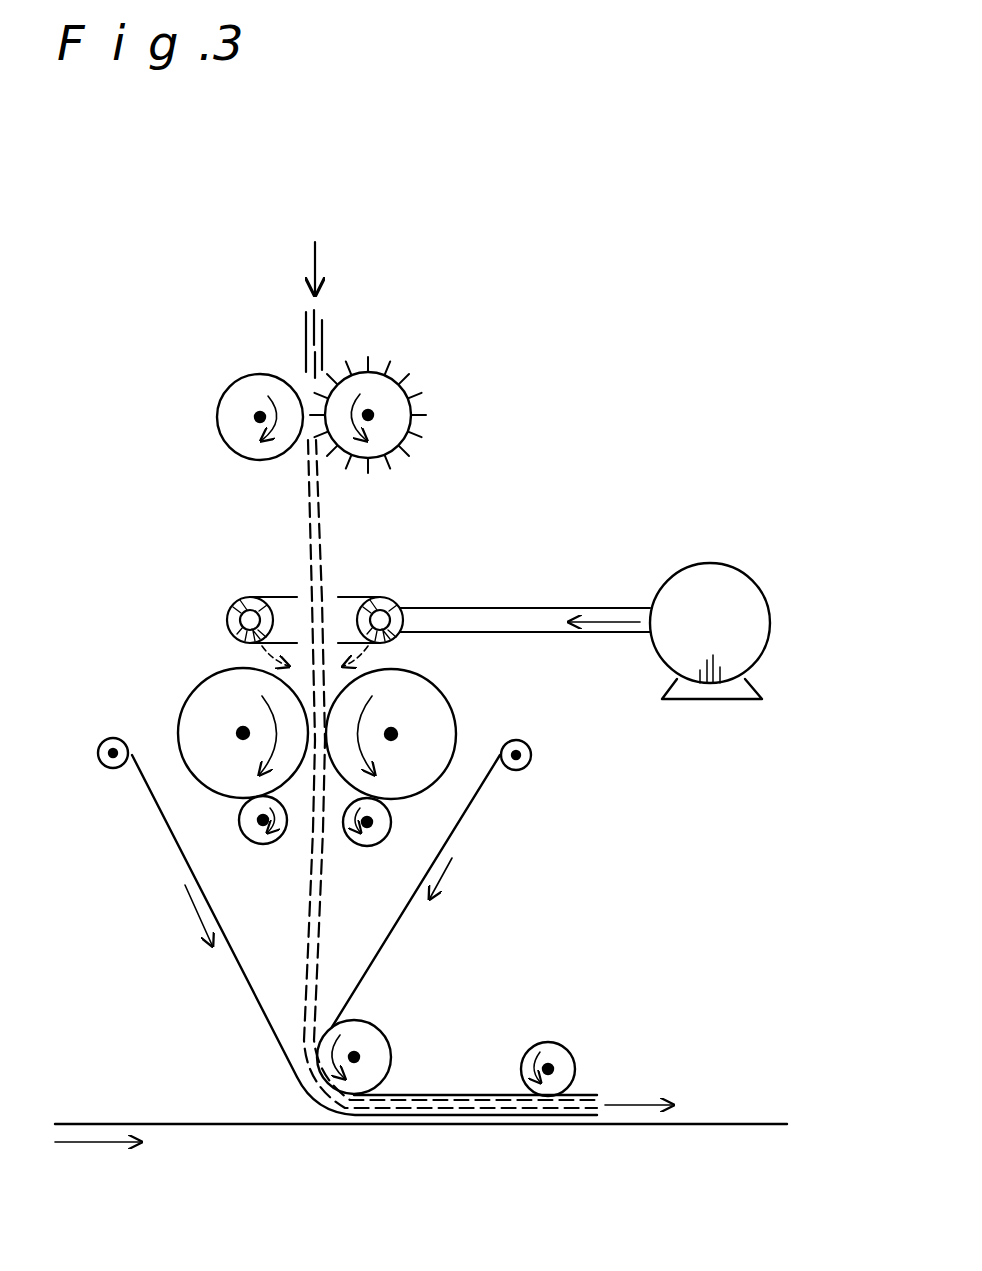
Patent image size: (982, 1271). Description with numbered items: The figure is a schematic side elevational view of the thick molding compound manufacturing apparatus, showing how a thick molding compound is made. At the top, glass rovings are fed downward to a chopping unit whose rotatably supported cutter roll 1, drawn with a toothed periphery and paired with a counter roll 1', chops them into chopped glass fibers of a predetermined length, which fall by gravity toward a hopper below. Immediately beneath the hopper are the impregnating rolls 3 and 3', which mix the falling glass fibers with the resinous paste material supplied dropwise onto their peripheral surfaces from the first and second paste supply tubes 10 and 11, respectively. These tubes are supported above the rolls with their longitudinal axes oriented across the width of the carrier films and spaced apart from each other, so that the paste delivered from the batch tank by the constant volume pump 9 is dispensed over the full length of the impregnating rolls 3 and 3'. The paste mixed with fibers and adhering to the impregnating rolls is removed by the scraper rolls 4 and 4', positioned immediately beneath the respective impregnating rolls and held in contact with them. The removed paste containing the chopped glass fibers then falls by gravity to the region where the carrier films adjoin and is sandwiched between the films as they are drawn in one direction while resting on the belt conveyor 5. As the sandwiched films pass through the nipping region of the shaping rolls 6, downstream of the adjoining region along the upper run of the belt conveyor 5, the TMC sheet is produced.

The cutter roll 1 is at (417, 398).
The counter roller 1' is at (240, 369).
The impregnating roll 3 is at (434, 726).
The impregnating roll 3' is at (202, 714).
The scraper roll 4 is at (453, 828).
The scraper roll 4' is at (177, 828).
The belt conveyor 5 is at (230, 1125).
The shaping rolls 6 is at (562, 1060).
The constant volume pump 9 is at (723, 593).
The first paste supply tube 10 is at (388, 603).
The second paste supply tube 11 is at (250, 597).